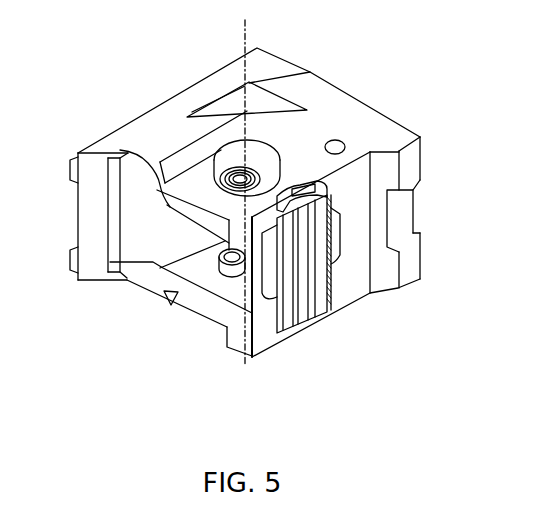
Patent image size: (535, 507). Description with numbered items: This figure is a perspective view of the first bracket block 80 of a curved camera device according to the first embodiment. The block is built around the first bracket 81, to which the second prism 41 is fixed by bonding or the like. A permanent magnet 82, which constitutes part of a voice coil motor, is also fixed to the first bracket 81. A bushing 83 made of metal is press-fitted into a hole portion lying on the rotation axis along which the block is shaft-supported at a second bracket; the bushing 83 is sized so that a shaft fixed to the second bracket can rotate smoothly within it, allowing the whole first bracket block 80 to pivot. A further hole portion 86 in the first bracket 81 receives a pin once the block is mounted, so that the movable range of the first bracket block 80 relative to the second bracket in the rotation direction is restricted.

The first bracket block 80 is at (249, 100).
The first bracket 81 is at (248, 47).
The permanent magnet 82 is at (321, 318).
The bushing 83 is at (277, 162).
The hole portion 86 is at (344, 141).
The second prism 41 is at (146, 228).